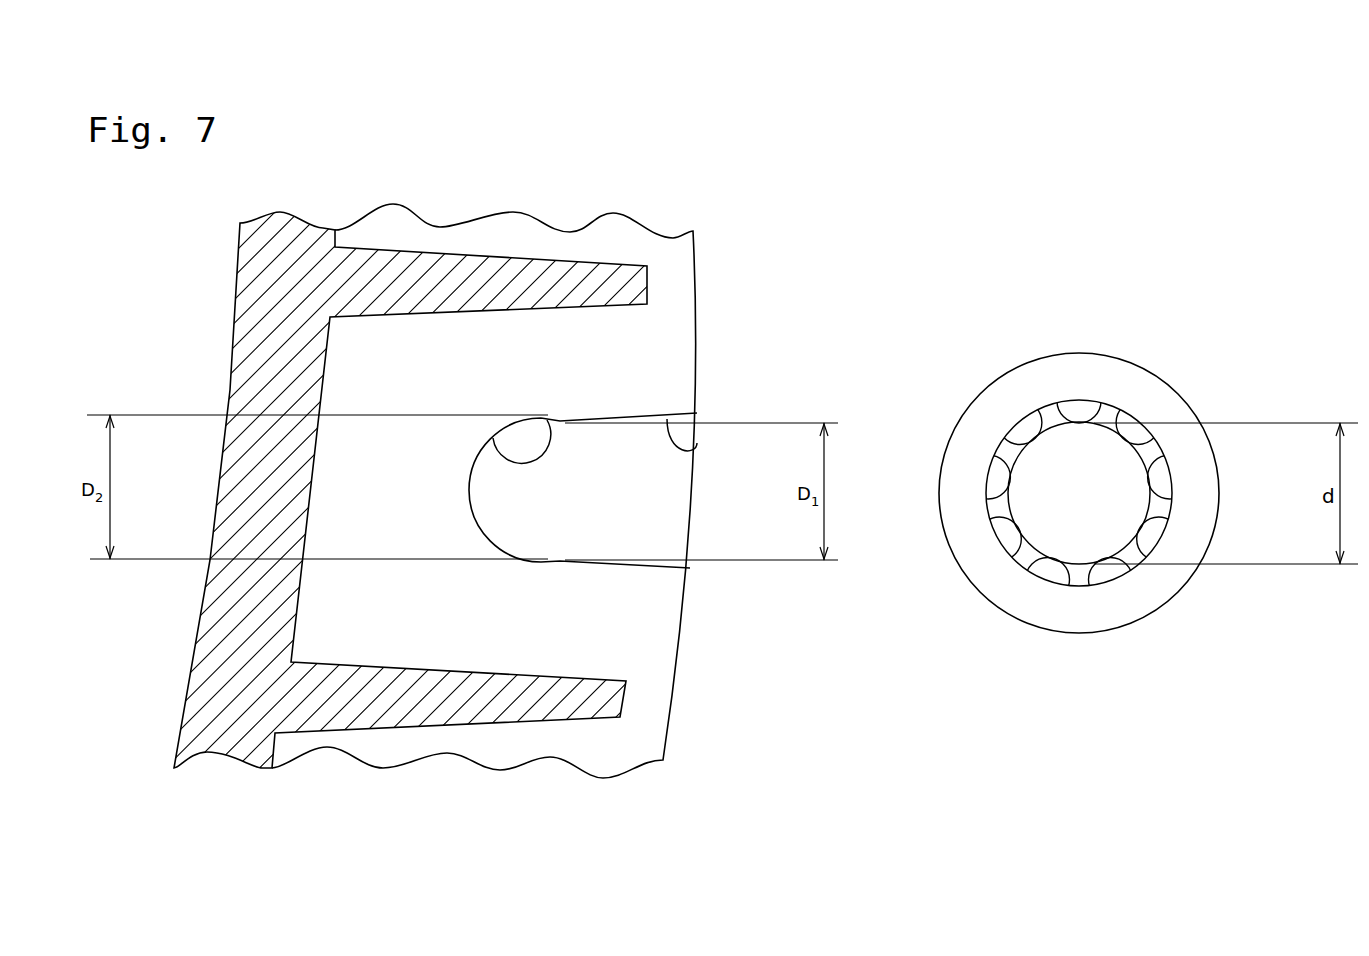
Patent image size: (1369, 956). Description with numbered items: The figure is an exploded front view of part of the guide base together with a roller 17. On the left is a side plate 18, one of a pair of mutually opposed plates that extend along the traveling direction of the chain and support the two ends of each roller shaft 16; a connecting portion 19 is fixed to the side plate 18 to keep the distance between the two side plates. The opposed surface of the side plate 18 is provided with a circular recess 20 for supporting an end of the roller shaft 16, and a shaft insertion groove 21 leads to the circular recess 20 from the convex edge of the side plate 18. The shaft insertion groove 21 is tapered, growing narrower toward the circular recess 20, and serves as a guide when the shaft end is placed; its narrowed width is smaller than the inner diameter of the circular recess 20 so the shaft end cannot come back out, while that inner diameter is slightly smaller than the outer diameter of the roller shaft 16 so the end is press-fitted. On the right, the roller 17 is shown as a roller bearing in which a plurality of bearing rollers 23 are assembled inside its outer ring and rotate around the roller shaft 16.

The roller shaft 16 is at (1063, 437).
The roller 17 is at (1110, 370).
The side plate 18 is at (657, 616).
The connecting portion 19 is at (608, 695).
The circular recess 20 is at (547, 420).
The shaft insertion groove 21 is at (697, 443).
The bearing roller 23 is at (1048, 574).